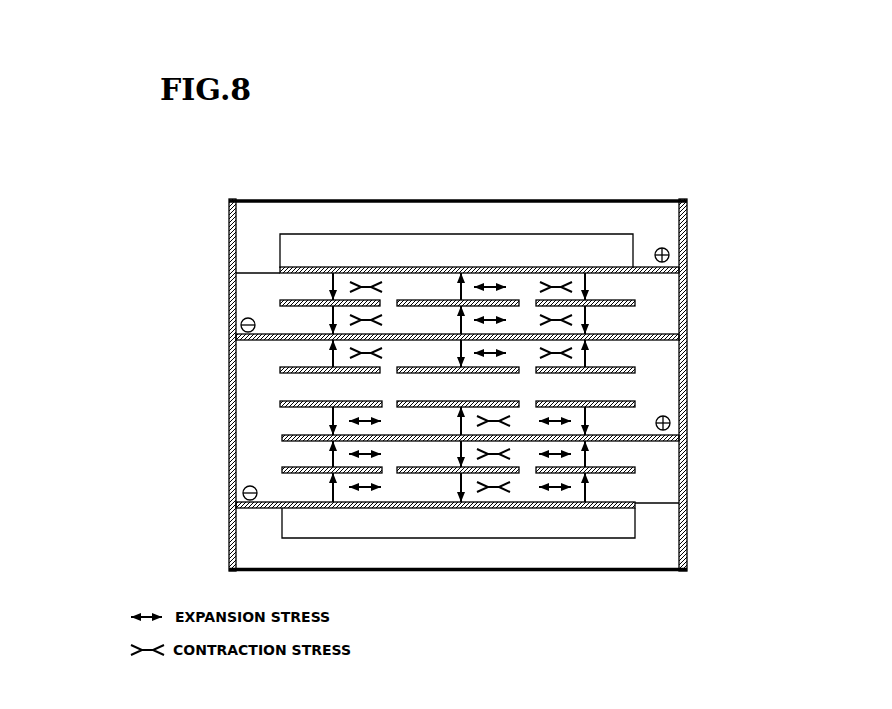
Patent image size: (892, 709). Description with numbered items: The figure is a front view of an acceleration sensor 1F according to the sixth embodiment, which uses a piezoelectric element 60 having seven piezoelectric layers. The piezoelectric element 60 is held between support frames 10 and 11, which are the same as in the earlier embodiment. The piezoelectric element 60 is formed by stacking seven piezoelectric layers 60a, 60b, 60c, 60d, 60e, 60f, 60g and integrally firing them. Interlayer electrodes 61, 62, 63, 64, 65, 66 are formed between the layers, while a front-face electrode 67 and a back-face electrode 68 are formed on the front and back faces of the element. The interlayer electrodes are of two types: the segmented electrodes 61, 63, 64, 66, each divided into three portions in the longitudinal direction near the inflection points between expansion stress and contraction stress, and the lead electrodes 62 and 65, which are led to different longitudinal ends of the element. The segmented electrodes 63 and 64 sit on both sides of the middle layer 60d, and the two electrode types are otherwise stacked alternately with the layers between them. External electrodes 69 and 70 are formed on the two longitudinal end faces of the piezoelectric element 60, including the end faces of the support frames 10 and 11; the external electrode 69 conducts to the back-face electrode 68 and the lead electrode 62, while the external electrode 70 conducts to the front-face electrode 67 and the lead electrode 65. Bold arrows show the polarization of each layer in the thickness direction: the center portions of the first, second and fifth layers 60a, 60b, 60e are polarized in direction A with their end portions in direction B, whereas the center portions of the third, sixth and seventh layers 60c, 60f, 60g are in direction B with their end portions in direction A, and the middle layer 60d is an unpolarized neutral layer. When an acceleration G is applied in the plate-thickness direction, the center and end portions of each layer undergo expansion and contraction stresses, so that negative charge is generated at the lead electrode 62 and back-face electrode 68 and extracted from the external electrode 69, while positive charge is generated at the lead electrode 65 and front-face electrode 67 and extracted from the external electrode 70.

The acceleration sensor 1F is at (465, 369).
The support frame 10 is at (616, 207).
The support frame 11 is at (605, 563).
The external electrode 69 is at (229, 240).
The external electrode 70 is at (690, 232).
The front-face electrode 67 is at (373, 267).
The back-face electrode 68 is at (440, 508).
The segmented electrode 61 is at (282, 301).
The lead electrode 62 is at (285, 336).
The segmented electrode 63 is at (285, 369).
The segmented electrode 64 is at (285, 403).
The lead electrode 65 is at (285, 437).
The segmented electrode 66 is at (285, 470).
The piezoelectric element 60 is at (546, 387).
The first piezoelectric layer 60a is at (640, 288).
The second piezoelectric layer 60b is at (637, 322).
The third piezoelectric layer 60c is at (635, 355).
The fourth piezoelectric layer 60d is at (635, 390).
The fifth piezoelectric layer 60e is at (632, 424).
The sixth piezoelectric layer 60f is at (632, 456).
The seventh piezoelectric layer 60g is at (541, 487).
The polarization direction A is at (461, 277).
The polarization direction B is at (333, 277).
The acceleration G is at (127, 318).